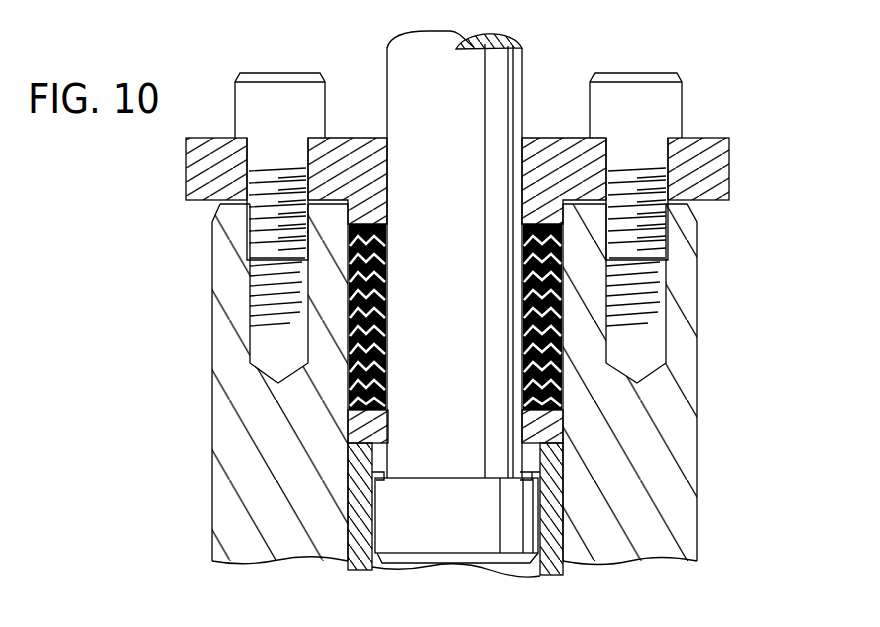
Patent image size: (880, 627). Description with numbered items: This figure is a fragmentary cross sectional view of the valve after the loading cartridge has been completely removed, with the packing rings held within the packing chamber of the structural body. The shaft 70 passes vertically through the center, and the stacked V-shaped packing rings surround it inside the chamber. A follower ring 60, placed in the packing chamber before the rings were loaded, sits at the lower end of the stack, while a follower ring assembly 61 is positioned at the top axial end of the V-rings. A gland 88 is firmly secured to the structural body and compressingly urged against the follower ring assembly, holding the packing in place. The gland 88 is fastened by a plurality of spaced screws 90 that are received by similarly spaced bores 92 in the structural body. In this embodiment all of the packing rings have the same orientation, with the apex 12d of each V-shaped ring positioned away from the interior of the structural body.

The gland 88 is at (722, 154).
The screws 90 is at (262, 158).
The bores 92 is at (256, 345).
The shaft 70 is at (443, 345).
The follower ring assembly 61 is at (378, 234).
The apex 12d is at (348, 432).
The follower ring 60 is at (552, 446).